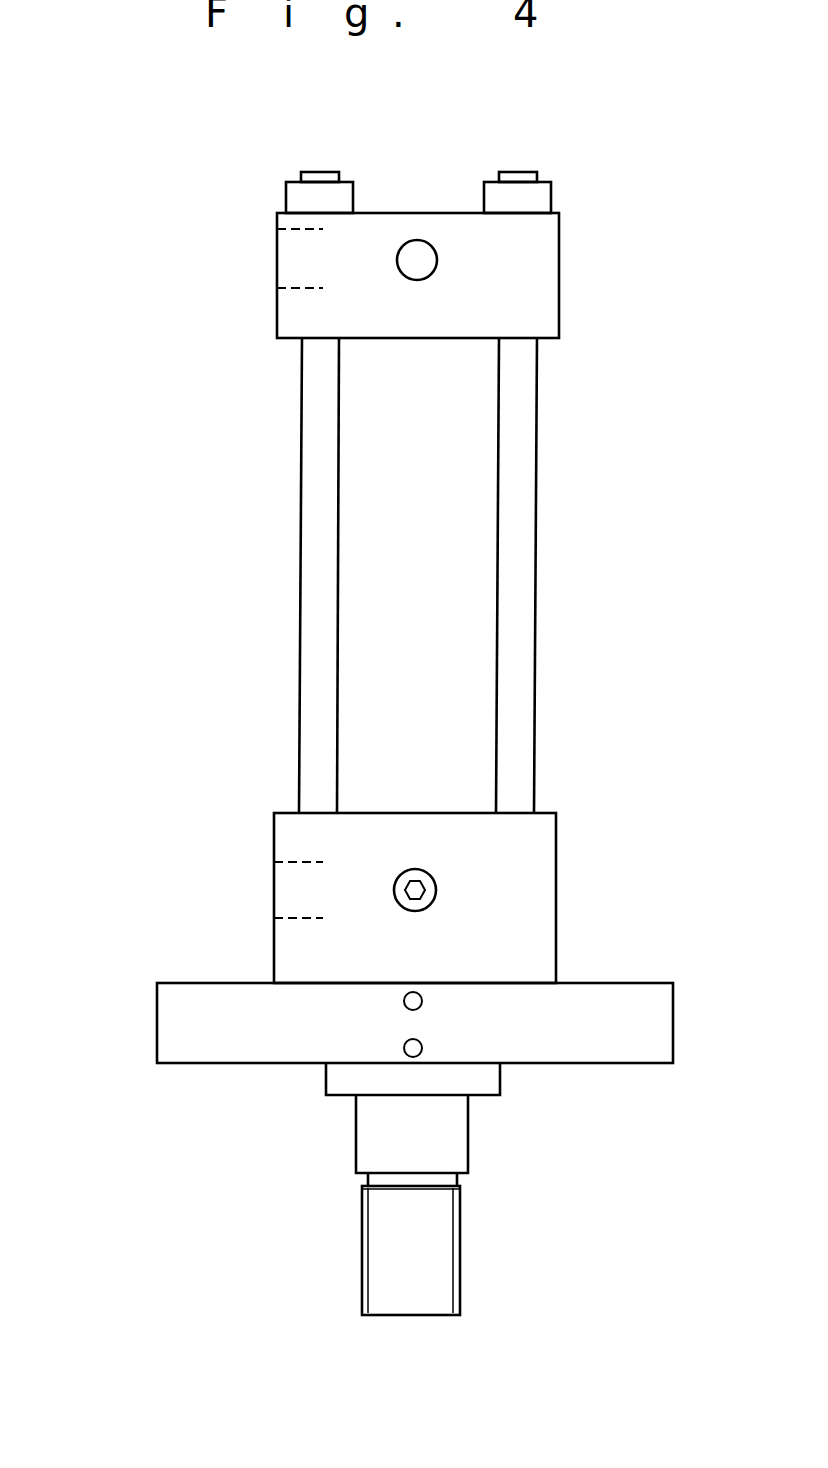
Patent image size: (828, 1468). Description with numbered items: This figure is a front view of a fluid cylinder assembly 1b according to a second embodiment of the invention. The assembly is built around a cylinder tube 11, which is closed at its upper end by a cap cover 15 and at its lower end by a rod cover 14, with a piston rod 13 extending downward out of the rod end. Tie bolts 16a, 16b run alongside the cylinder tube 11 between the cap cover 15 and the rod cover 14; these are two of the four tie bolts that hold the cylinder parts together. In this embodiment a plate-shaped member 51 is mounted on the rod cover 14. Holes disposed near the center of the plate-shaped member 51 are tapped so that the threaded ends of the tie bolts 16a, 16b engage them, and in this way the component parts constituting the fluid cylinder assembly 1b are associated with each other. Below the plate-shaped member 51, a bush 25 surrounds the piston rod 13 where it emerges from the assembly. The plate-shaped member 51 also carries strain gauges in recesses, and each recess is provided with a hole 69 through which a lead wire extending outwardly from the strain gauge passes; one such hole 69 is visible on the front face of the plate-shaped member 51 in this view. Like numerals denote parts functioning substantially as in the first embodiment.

The fluid cylinder assembly 1b is at (103, 240).
The cylinder tube 11 is at (452, 544).
The piston rod 13 is at (372, 1141).
The rod cover 14 is at (545, 843).
The cap cover 15 is at (550, 270).
The tie bolt 16a is at (527, 425).
The tie bolt 16b is at (300, 412).
The bush 25 is at (337, 1080).
The plate-shaped member 51 is at (590, 998).
The hole 69 is at (416, 1055).